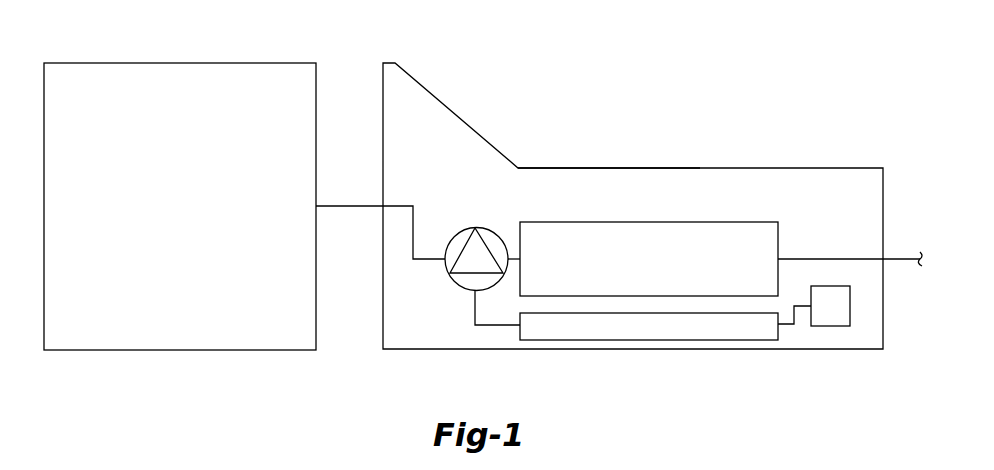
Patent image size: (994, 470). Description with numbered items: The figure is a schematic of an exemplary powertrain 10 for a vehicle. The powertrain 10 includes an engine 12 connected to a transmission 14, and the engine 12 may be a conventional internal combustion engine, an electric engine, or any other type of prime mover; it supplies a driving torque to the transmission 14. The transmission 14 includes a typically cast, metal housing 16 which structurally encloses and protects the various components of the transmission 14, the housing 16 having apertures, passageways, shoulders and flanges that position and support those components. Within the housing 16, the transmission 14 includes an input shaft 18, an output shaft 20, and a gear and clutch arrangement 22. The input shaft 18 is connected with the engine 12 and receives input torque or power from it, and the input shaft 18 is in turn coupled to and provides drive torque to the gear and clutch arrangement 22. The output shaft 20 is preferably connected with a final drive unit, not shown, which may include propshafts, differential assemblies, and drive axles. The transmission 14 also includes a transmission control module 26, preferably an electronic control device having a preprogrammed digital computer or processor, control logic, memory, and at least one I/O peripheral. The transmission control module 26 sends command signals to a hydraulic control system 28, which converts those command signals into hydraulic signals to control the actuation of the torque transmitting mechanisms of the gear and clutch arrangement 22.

The powertrain 10 is at (820, 100).
The engine 12 is at (169, 220).
The transmission 14 is at (722, 168).
The housing 16 is at (548, 168).
The input shaft 18 is at (398, 205).
The output shaft 20 is at (830, 258).
The gear and clutch arrangement 22 is at (637, 270).
The transmission control module 26 is at (830, 326).
The hydraulic control system 28 is at (717, 340).